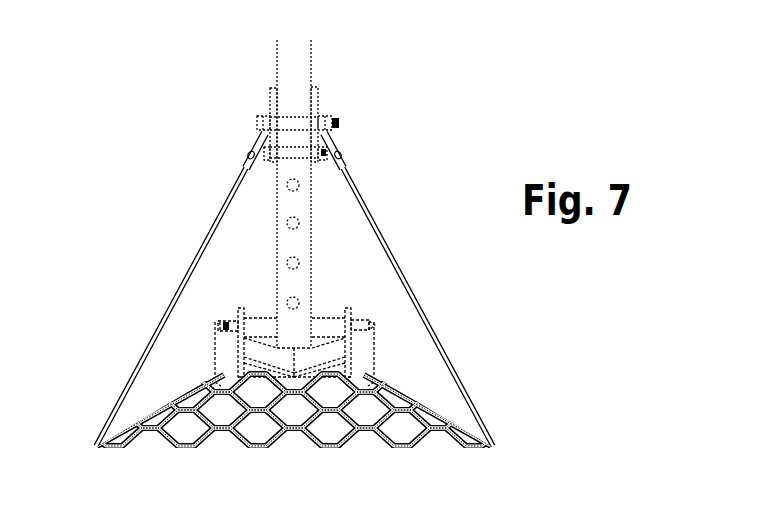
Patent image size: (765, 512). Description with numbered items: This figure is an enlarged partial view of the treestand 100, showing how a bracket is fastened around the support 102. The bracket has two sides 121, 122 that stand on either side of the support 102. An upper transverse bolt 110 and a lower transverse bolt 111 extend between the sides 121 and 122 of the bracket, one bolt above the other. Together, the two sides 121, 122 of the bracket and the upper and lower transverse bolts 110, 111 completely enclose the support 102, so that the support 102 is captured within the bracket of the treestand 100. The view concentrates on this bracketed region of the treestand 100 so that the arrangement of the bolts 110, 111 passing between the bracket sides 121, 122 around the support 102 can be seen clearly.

The treestand 100 is at (148, 158).
The support 102 is at (295, 78).
The upper transverse bolt 110 is at (288, 125).
The lower transverse bolt 111 is at (293, 149).
The side of the bracket 121 is at (272, 100).
The side of the bracket 122 is at (318, 99).